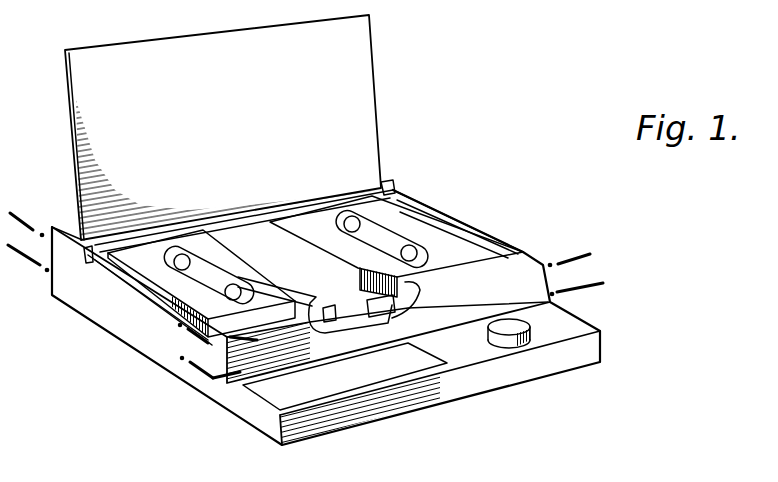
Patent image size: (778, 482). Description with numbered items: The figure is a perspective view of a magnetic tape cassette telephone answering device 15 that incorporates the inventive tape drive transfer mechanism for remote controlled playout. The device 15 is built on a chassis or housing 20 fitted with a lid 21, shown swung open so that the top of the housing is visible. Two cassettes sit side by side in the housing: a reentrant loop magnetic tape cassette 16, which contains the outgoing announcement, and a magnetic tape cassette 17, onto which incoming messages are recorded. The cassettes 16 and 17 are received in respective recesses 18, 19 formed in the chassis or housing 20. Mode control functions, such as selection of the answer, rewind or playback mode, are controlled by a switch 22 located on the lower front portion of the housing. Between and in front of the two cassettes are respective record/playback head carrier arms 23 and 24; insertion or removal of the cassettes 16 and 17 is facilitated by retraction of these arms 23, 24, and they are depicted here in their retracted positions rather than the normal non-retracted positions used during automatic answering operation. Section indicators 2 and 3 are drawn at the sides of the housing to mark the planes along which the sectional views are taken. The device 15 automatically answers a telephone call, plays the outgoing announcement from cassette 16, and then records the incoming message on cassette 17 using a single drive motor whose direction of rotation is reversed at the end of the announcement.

The section line 2- 2 is at (23, 210).
The section line 3- 3 is at (18, 272).
The telephone answering device 15 is at (458, 169).
The reentrant loop magnetic tape cassette 16 is at (195, 247).
The magnetic tape cassette 17 is at (318, 218).
The recess 18 is at (100, 253).
The recess 19 is at (275, 213).
The chassis or housing 20 is at (155, 346).
The lid 21 is at (353, 62).
The switch 22 is at (517, 345).
The record/playback head carrier arm 23 is at (353, 335).
The record/playback head carrier arm 24 is at (397, 323).